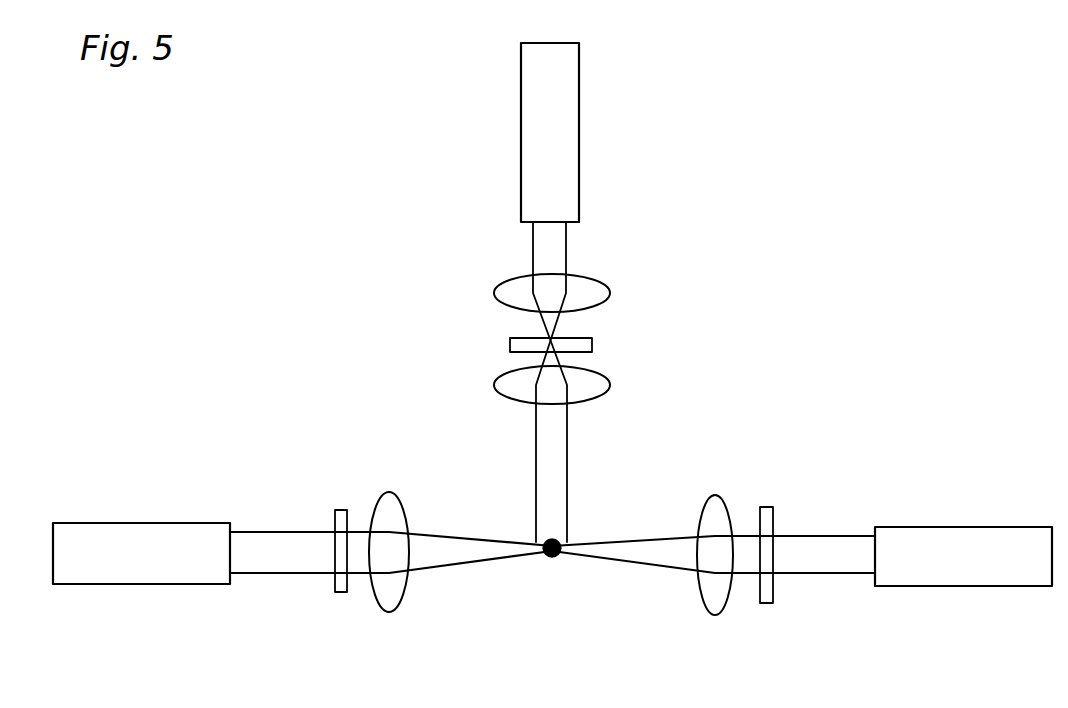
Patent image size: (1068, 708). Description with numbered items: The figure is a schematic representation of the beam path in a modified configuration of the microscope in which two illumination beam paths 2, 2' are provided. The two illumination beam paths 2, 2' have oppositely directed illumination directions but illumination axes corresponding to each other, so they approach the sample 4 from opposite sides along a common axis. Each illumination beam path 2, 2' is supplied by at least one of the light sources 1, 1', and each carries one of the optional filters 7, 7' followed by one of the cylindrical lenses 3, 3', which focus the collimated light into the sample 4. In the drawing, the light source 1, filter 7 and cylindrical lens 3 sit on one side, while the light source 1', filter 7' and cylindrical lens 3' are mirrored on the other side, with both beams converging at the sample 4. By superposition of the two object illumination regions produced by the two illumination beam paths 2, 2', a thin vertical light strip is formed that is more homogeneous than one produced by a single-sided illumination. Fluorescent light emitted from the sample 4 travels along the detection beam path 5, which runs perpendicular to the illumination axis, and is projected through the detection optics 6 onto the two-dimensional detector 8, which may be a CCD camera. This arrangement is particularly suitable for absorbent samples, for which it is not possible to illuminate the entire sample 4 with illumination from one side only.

The light source 1 is at (141, 515).
The light source 1' is at (963, 597).
The illumination beam path 2 is at (391, 514).
The illumination beam path 2' is at (713, 517).
The cylindrical lens 3 is at (362, 592).
The cylindrical lens 3' is at (751, 518).
The sample 4 is at (548, 560).
The detection beam path 5 is at (553, 447).
The detection optics 6 is at (600, 290).
The filter 7 is at (319, 574).
The filter 7' is at (778, 586).
The two-dimensional detector 8 is at (563, 148).